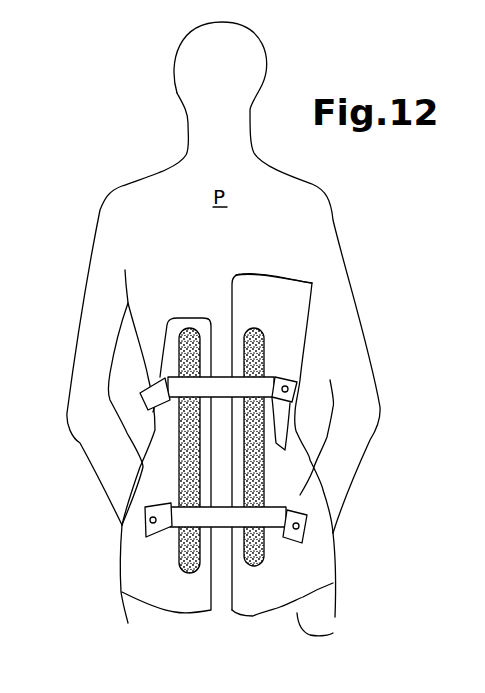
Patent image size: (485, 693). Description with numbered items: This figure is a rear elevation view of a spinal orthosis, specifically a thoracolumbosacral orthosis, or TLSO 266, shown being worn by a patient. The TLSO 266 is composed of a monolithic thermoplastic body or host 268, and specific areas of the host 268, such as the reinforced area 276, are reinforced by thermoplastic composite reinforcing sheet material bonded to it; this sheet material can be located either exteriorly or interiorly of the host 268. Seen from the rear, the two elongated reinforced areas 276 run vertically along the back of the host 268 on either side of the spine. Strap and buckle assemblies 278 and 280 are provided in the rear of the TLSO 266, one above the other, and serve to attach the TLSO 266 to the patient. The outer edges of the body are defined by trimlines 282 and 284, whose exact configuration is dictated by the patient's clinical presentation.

The thoracolumbosacral orthosis (TLSO) 266 is at (113, 580).
The monolithic thermoplastic body or host 268 is at (320, 562).
The reinforced area 276 is at (253, 458).
The strap and buckle assembly 278 is at (285, 364).
The strap and buckle assembly 280 is at (301, 496).
The trimline 282 is at (333, 633).
The trimline 284 is at (280, 290).